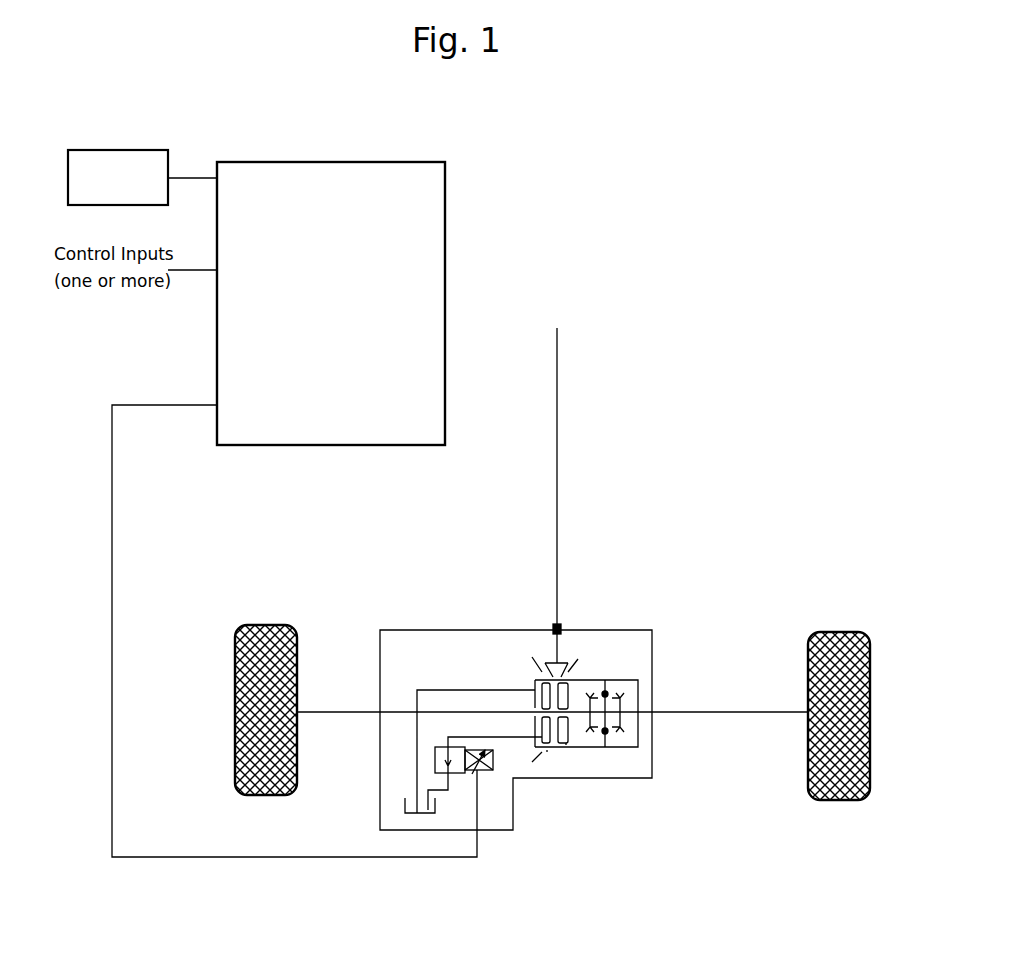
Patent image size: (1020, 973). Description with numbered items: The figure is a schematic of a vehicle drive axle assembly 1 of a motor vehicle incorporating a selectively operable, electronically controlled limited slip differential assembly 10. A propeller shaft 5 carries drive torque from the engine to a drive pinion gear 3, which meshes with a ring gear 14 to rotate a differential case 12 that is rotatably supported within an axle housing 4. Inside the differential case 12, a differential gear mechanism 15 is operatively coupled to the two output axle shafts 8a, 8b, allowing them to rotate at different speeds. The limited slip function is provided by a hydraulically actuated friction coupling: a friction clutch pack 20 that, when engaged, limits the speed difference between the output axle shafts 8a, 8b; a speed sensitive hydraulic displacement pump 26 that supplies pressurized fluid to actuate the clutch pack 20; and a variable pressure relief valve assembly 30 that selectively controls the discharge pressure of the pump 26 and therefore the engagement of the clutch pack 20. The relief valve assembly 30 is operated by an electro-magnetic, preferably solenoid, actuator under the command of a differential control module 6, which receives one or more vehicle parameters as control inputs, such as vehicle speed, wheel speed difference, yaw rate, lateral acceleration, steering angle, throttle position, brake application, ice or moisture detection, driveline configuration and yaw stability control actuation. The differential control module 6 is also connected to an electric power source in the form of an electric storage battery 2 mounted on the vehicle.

The vehicle drive axle assembly 1 is at (668, 588).
The electric storage battery 2 is at (120, 150).
The drive pinion gear 3 is at (548, 661).
The axle housing 4 is at (402, 630).
The propeller shaft 5 is at (557, 374).
The differential control module 6 is at (334, 162).
The output axle shaft 8a is at (341, 712).
The output axle shaft 8b is at (734, 712).
The limited slip differential assembly 10 is at (598, 667).
The differential case 12 is at (628, 680).
The ring gear 14 is at (533, 680).
The differential gear mechanism 15 is at (612, 740).
The friction clutch pack 20 is at (568, 744).
The speed sensitive hydraulic displacement pump 26 is at (551, 750).
The variable pressure relief valve assembly 30 is at (457, 774).